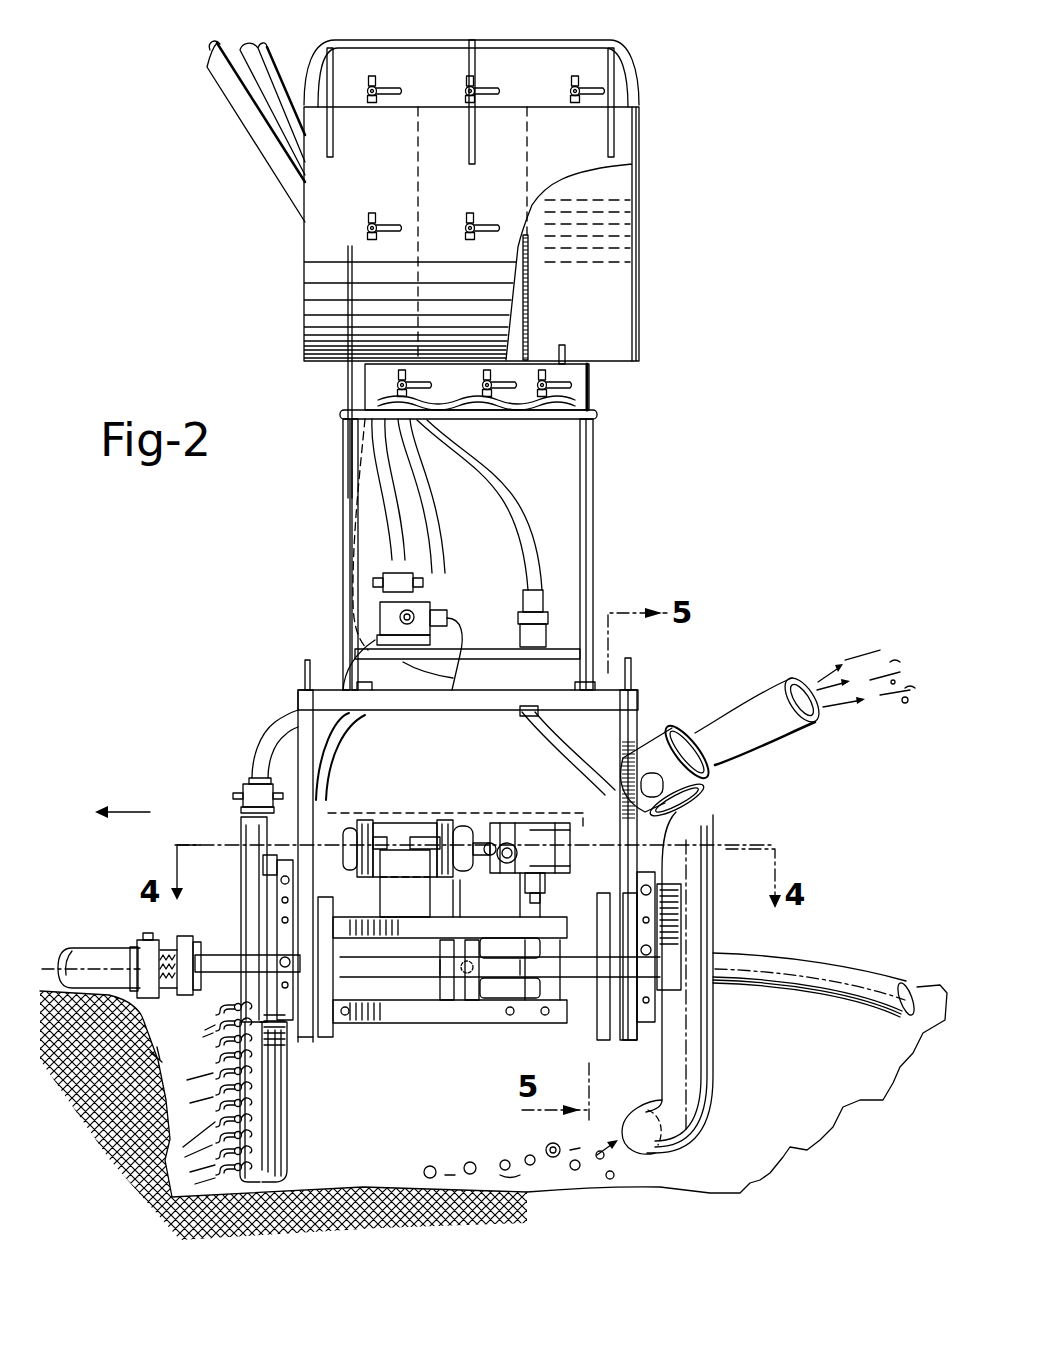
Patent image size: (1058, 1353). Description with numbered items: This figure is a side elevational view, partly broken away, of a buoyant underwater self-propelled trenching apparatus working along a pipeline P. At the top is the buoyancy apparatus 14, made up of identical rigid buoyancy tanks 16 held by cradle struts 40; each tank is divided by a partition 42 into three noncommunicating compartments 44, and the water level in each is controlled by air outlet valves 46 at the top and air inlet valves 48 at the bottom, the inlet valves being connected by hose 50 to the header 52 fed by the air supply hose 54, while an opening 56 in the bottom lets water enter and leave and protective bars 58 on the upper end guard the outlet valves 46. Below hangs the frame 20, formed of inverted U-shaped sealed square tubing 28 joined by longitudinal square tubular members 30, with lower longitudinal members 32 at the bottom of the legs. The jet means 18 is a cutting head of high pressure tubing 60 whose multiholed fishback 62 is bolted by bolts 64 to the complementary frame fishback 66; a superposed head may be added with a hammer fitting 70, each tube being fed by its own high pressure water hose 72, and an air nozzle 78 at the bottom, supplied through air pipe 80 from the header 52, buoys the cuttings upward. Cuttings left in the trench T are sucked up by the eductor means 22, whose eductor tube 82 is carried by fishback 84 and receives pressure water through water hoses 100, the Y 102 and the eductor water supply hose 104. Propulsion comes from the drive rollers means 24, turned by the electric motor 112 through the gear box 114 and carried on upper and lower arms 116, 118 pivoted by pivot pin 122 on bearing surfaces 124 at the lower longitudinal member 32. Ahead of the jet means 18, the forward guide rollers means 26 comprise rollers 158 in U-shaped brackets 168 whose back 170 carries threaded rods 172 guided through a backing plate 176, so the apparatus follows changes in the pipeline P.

The buoyancy apparatus 14 is at (515, 249).
The buoyancy tanks 16 is at (640, 331).
The jet means 18 is at (278, 1082).
The frame 20 is at (407, 720).
The eductor means 22 is at (713, 823).
The drive rollers means 24 is at (505, 1003).
The forward guide rollers means 26 is at (126, 935).
The inverted U-shaped sealed square tubing 28 is at (305, 725).
The longitudinal square tubular members 30 is at (453, 712).
The lower longitudinal members 32 is at (395, 978).
The cradle struts 40 is at (596, 390).
The partition 42 is at (428, 200).
The compartments 44 is at (630, 178).
The air outlet valves 46 is at (577, 82).
The air inlet valves 48 is at (460, 376).
The hose 50 is at (400, 616).
The header 52 is at (430, 610).
The air supply hose 54 is at (410, 520).
The opening 56 is at (568, 350).
The protective bars 58 is at (455, 40).
The high pressure tubing 60 is at (245, 832).
The fishback 62 is at (263, 866).
The bolts 64 is at (290, 880).
The frame fishback 66 is at (280, 897).
The hammer fitting 70 is at (249, 795).
The high pressure water hose 72 is at (258, 762).
The air nozzle 78 is at (236, 1185).
The air pipe 80 is at (288, 1112).
The eductor tube 82 is at (700, 1082).
The fishback 84 is at (680, 876).
The water hoses 100 is at (578, 746).
The Y 102 is at (530, 720).
The eductor water supply hose 104 is at (515, 500).
The electric motor 112 is at (418, 825).
The gear box 114 is at (525, 832).
The upper arms 116 is at (465, 921).
The lower arms 118 is at (455, 1022).
The pivot pin 122 is at (350, 1035).
The bearing surfaces 124 is at (360, 950).
The rollers 158 is at (145, 1009).
The U-shaped brackets 168 is at (143, 940).
The back 170 is at (160, 1062).
The threaded rods 172 is at (182, 936).
The backing plate 176 is at (200, 940).
The pipeline P is at (845, 972).
The trench T is at (372, 1190).